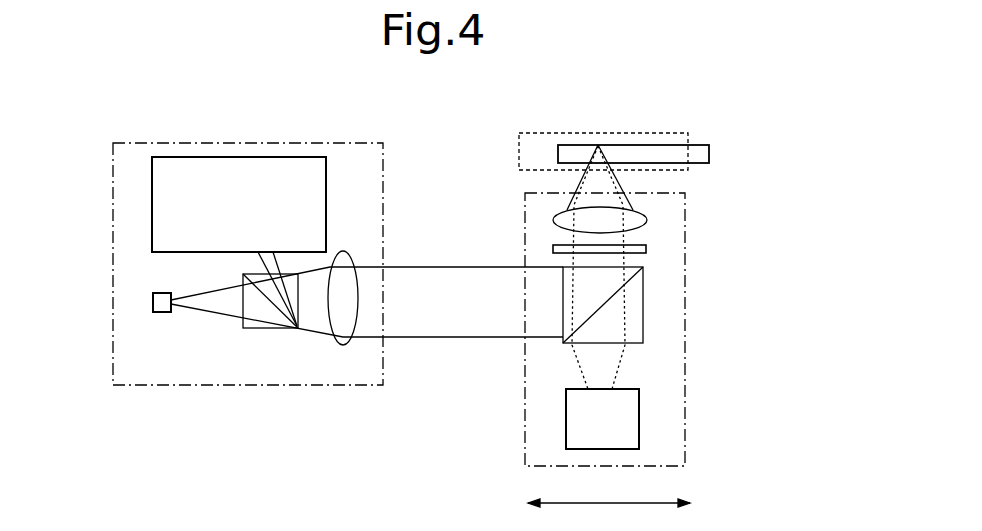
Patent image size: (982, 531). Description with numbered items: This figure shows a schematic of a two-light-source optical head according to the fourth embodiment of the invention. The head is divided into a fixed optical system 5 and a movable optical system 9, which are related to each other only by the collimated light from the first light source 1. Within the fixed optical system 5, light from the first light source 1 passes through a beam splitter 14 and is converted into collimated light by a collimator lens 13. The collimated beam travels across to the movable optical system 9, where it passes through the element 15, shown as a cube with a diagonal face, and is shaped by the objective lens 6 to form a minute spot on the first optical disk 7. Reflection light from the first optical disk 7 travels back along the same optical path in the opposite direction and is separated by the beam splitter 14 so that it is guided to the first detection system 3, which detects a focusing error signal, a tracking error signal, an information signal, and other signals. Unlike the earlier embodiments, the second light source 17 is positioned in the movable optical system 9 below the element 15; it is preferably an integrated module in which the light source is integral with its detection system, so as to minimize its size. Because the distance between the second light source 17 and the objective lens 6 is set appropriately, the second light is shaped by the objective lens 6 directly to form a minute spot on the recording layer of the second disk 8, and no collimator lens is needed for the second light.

The first light source 1 is at (153, 302).
The first detection system 3 is at (173, 157).
The fixed optical system 5 is at (176, 376).
The objective lens 6 is at (647, 220).
The first optical disk 7 is at (705, 158).
The second disk 8 is at (540, 140).
The movable optical system 9 is at (675, 445).
The collimator lens 13 is at (340, 322).
The beam splitter 14 is at (253, 310).
The polarizing beam splitter 15 is at (638, 313).
The second light source 17 is at (638, 400).